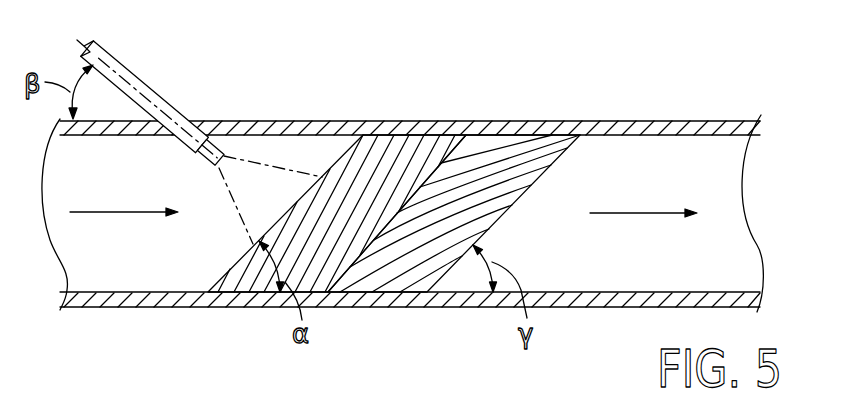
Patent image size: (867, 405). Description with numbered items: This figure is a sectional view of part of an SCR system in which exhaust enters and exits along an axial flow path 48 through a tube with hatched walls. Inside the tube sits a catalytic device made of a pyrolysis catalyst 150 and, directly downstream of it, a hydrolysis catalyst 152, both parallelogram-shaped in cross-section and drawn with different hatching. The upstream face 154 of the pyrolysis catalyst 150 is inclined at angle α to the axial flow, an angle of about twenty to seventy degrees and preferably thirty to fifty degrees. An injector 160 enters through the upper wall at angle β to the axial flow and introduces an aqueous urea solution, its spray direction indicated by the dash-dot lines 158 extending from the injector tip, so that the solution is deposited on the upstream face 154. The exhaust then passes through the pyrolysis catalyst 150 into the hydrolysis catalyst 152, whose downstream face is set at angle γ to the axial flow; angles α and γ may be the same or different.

The axial flow path 48 is at (88, 211).
The pyrolysis catalyst 150 is at (397, 177).
The second baffle plate 152 is at (557, 138).
The upstream face 154 is at (348, 150).
The axis line 158 is at (268, 164).
The injector 160 is at (143, 79).